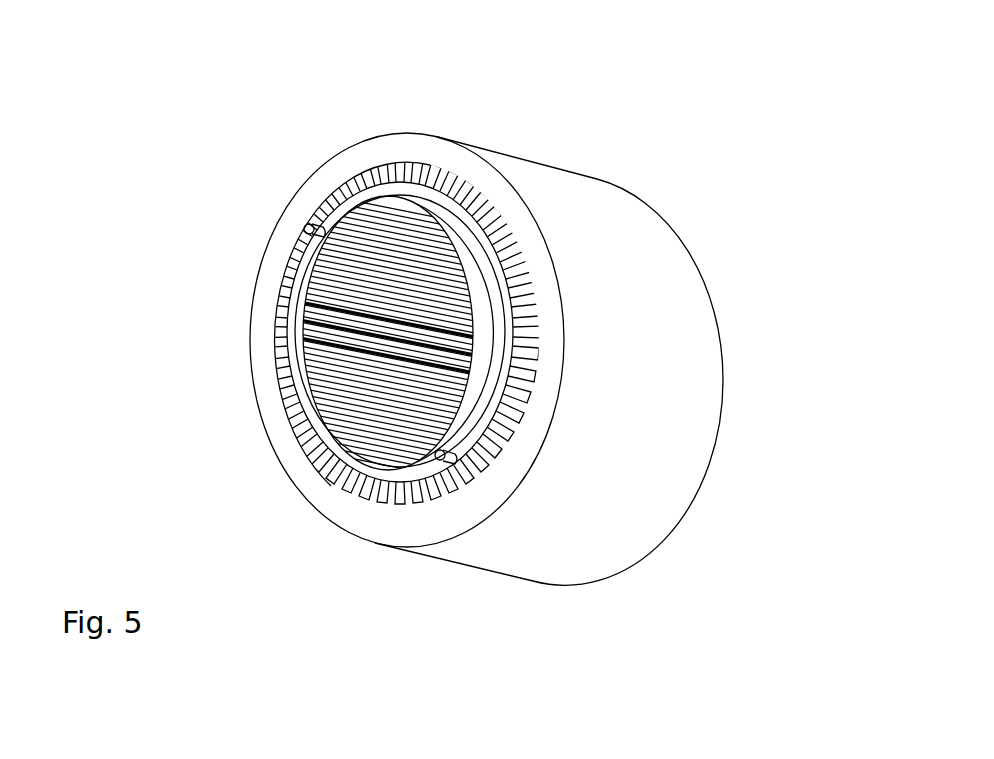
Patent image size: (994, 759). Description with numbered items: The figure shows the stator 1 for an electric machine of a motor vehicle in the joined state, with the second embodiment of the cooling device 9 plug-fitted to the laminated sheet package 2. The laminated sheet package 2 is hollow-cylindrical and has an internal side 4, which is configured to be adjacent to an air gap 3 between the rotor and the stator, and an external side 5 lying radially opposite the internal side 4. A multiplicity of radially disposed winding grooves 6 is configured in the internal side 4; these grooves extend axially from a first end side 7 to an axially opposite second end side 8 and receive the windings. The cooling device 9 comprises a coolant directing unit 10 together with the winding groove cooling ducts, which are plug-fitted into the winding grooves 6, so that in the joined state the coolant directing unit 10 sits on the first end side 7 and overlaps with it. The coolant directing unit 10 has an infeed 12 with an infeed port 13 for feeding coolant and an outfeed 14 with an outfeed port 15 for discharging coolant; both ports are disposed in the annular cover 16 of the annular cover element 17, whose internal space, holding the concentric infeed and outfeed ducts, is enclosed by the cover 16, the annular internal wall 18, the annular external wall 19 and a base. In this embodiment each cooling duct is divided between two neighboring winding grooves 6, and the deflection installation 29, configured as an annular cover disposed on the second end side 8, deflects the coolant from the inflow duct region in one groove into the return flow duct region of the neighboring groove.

The stator 1 is at (551, 86).
The laminated sheet package 2 is at (667, 237).
The air gap 3 is at (362, 404).
The internal side 4 is at (338, 357).
The external side 5 is at (611, 541).
The winding grooves 6 is at (364, 528).
The first end side 7 is at (408, 153).
The second end side 8 is at (730, 258).
The cooling device 9 is at (252, 446).
The coolant directing unit 10 is at (264, 310).
The infeed 12 is at (312, 211).
The infeed port 13 is at (305, 226).
The outfeed 14 is at (454, 480).
The outfeed port 15 is at (441, 468).
The annular cover 16 is at (301, 280).
The annular cover element 17 is at (373, 197).
The annular internal wall 18 is at (301, 349).
The annular external wall 19 is at (505, 420).
The deflection installation 29 is at (462, 349).